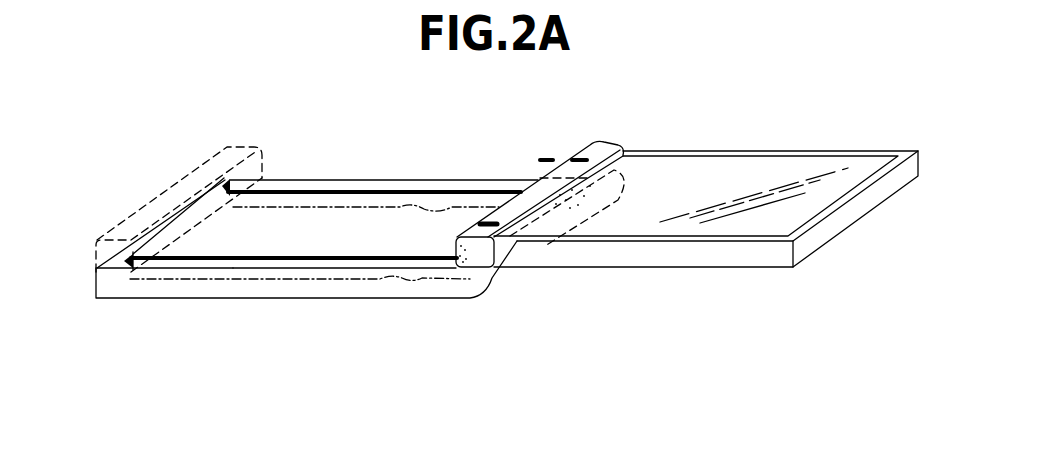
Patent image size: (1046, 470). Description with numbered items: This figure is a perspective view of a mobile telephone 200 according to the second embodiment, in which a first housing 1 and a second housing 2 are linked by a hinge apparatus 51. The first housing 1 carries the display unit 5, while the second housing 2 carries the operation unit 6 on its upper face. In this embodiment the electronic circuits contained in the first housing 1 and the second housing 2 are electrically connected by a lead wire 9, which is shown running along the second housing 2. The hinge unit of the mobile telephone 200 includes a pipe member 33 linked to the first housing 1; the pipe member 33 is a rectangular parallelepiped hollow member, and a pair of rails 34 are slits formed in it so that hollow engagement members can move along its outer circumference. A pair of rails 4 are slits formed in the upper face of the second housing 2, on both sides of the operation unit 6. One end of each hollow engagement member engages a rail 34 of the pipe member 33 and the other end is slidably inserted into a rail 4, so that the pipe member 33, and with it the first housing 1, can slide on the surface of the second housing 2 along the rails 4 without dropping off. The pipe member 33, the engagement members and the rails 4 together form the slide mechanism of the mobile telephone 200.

The mobile telephone 200 is at (142, 64).
The first housing 1 is at (673, 258).
The second housing 2 is at (195, 293).
The rails 4 is at (373, 257).
The display unit 5 is at (728, 170).
The operation unit 6 is at (313, 227).
The lead wire 9 is at (400, 280).
The pipe member 33 is at (165, 188).
The rails 34 is at (492, 221).
The hinge apparatus 51 is at (606, 122).